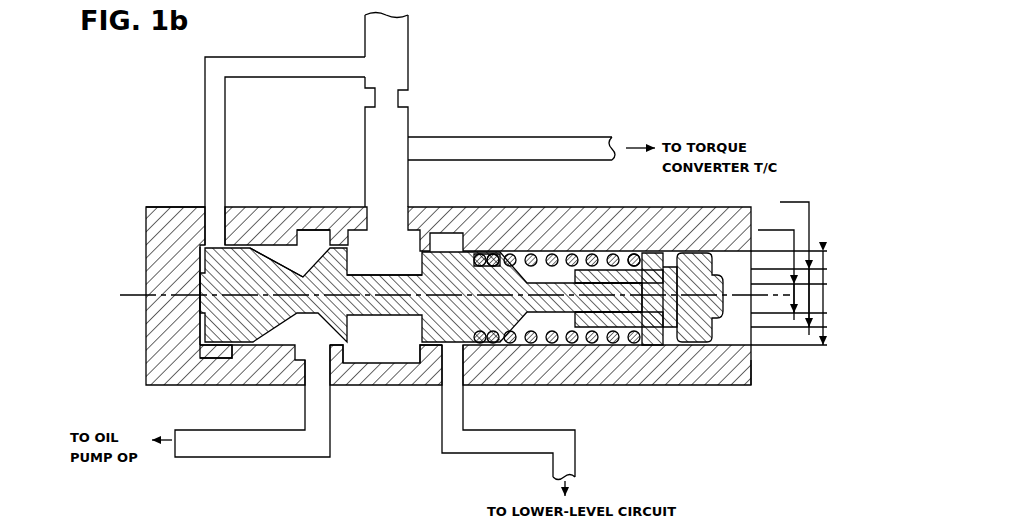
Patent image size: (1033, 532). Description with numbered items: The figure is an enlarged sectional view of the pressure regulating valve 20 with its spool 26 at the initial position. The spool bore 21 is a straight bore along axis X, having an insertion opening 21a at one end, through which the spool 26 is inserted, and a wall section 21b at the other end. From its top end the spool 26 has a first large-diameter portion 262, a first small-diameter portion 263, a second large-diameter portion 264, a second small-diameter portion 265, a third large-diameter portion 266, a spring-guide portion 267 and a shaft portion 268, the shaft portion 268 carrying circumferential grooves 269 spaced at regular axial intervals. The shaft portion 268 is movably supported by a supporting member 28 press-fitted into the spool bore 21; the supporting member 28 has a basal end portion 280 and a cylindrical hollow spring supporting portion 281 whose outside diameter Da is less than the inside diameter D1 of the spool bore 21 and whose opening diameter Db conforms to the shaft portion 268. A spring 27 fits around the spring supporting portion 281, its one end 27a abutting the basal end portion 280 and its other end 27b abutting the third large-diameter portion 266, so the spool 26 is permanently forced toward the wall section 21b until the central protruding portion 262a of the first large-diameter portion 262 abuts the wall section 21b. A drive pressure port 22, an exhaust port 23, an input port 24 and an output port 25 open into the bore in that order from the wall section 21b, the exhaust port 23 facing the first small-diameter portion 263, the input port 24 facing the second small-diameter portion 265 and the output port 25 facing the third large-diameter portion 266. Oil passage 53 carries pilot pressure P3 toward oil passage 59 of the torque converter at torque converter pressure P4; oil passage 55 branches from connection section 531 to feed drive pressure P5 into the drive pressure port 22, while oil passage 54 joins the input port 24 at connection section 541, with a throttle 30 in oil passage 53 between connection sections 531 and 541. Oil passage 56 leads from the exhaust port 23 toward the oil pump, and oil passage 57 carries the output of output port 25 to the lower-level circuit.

The pressure regulating valve 20 is at (148, 205).
The spool bore 21 is at (735, 240).
The insertion opening 21a is at (752, 372).
The wall section 21b is at (200, 252).
The drive pressure port 22 is at (205, 210).
The exhaust port 23 is at (305, 380).
The input port 24 is at (367, 195).
The output port 25 is at (456, 378).
The spool 26 is at (205, 324).
The first large-diameter portion 262 is at (218, 350).
The central protruding portion 262a is at (200, 292).
The first small-diameter portion 263 is at (285, 258).
The second large-diameter portion 264 is at (350, 362).
The second small-diameter portion 265 is at (378, 275).
The third large-diameter portion 266 is at (426, 362).
The spring-guide portion 267 is at (498, 258).
The shaft portion 268 is at (626, 270).
The grooves 269 is at (590, 330).
The spring 27 is at (568, 254).
The one end of spring 27a is at (640, 256).
The other end of spring 27b is at (476, 258).
The supporting member 28 is at (684, 360).
The basal end portion 280 is at (700, 342).
The spring supporting portion 281 is at (650, 345).
The throttle 30 is at (365, 103).
The oil passage 53 is at (408, 62).
The connection section 531 is at (365, 55).
The oil passage 54 is at (367, 170).
The connection section 541 is at (410, 134).
The oil passage 55 is at (252, 57).
The oil passage 56 is at (196, 446).
The oil passage 57 is at (471, 447).
The oil passage 59 is at (502, 140).
The pilot pressure P3 is at (385, 30).
The torque converter pressure P4 is at (568, 150).
The drive pressure P5 is at (218, 100).
The outside diameter of spring supporting portion Da is at (789, 256).
The opening diameter of spring supporting portion Db is at (789, 263).
The inside diameter of spool bore D1 is at (789, 321).
The axis X is at (775, 303).